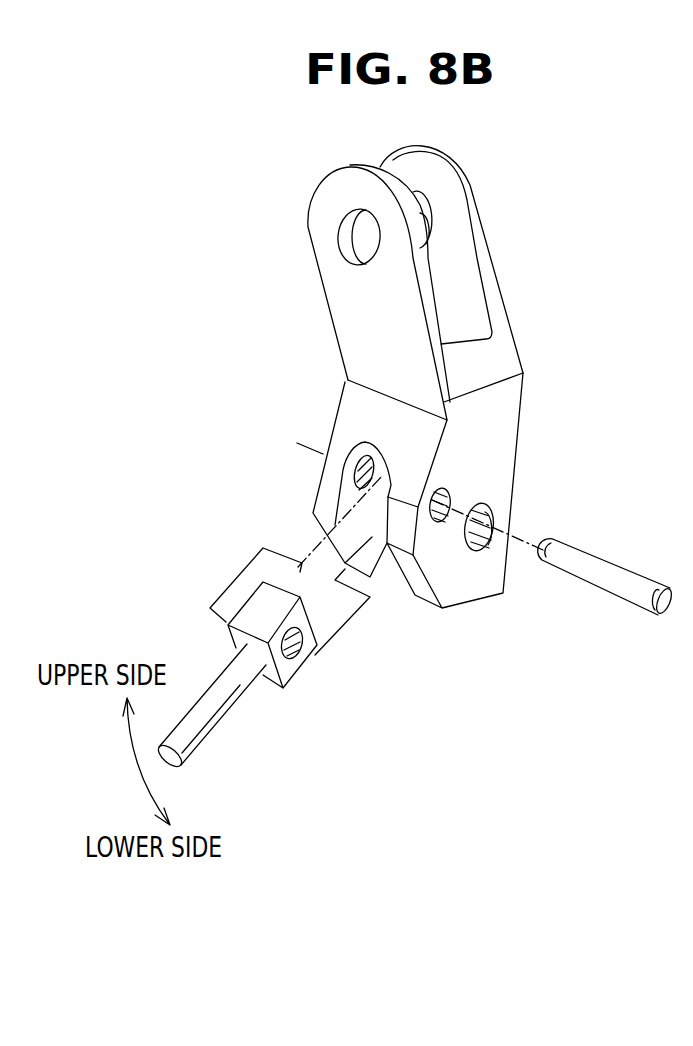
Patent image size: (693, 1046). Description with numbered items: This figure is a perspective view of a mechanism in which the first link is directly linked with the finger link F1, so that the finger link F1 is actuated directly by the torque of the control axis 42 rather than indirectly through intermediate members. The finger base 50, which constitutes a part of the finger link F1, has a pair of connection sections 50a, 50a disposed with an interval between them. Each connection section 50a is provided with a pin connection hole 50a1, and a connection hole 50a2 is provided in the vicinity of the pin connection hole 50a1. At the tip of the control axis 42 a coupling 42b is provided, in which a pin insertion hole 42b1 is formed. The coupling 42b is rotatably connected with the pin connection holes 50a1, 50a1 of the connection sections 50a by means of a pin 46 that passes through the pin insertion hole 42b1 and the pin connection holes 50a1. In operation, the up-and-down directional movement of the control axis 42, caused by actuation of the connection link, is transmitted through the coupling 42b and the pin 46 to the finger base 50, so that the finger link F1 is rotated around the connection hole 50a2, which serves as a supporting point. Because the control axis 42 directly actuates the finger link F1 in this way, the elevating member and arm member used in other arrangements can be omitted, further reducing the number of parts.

The finger link F1 is at (540, 283).
The finger base 50 is at (508, 403).
The connection section 50a is at (325, 490).
The pin connection hole 50a1 is at (388, 497).
The connection hole 50a2 is at (487, 518).
The pin 46 is at (617, 576).
The control axis 42 is at (218, 688).
The coupling 42b is at (293, 677).
The pin insertion hole 42b1 is at (302, 657).